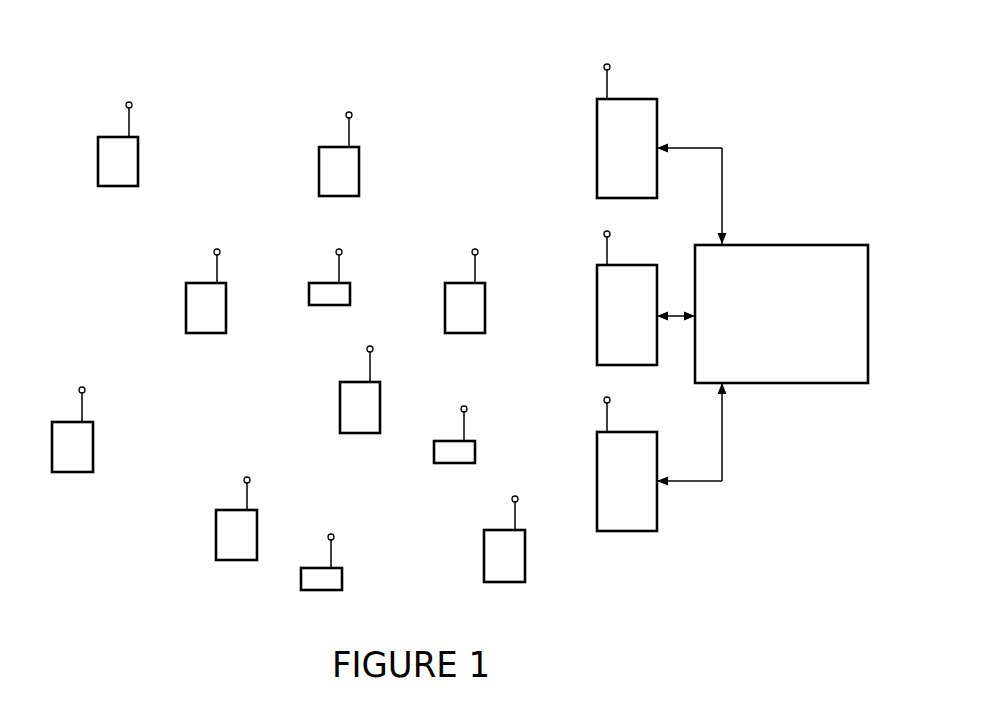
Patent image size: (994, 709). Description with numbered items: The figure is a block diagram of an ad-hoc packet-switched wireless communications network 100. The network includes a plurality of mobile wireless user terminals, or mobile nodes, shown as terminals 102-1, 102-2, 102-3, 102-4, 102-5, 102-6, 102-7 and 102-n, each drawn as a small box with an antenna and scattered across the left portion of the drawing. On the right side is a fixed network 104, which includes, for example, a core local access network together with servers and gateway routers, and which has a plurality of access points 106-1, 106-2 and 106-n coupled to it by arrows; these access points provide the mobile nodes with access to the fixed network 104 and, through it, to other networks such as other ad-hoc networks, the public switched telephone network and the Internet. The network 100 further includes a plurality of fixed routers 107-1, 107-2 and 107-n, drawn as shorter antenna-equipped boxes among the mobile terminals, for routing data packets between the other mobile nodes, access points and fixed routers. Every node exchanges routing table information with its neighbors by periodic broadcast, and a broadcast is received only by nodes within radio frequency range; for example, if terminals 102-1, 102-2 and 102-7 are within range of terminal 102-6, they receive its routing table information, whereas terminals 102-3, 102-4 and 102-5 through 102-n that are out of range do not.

The ad-hoc packet-switched wireless communications network 100 is at (744, 84).
The mobile wireless user terminal 102-1 is at (72, 472).
The mobile wireless user terminal 102-2 is at (210, 333).
The mobile wireless user terminal 102-3 is at (357, 433).
The mobile wireless user terminal 102-4 is at (234, 560).
The mobile wireless user terminal 102-5 is at (463, 333).
The mobile wireless user terminal 102-6 is at (122, 186).
The mobile wireless user terminal 102-7 is at (338, 196).
The mobile wireless user terminal 102-n is at (505, 582).
The fixed router 107-1 is at (340, 305).
The fixed router 107-2 is at (321, 590).
The fixed router 107-n is at (455, 463).
The access point 106-1 is at (625, 198).
The access point 106-2 is at (625, 365).
The access point 106-n is at (625, 531).
The fixed network 104 is at (773, 383).